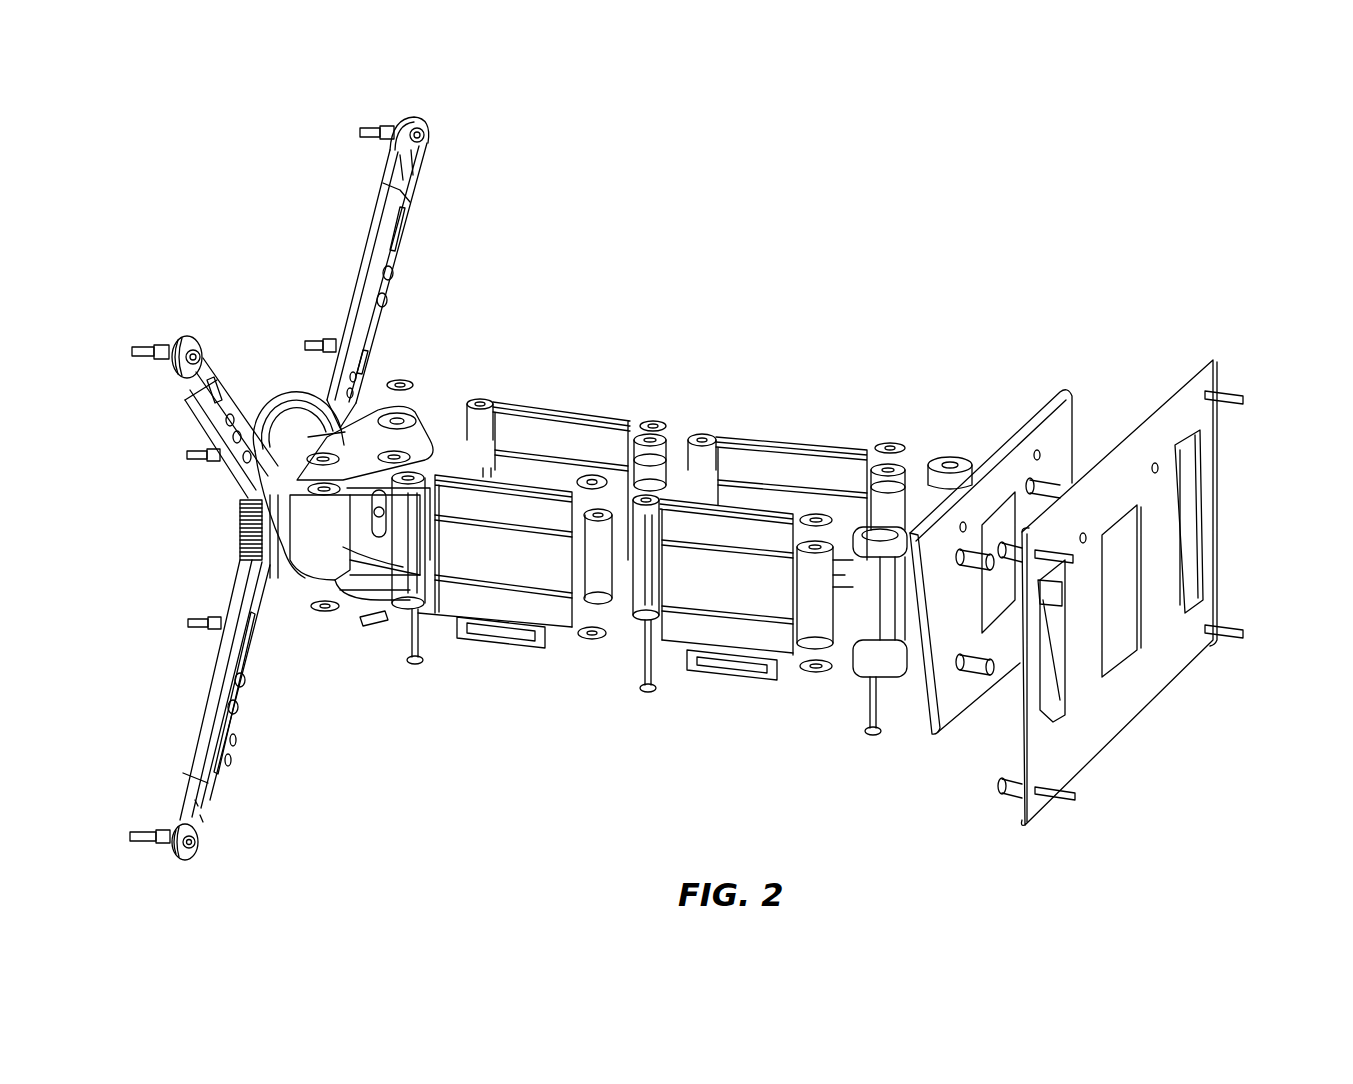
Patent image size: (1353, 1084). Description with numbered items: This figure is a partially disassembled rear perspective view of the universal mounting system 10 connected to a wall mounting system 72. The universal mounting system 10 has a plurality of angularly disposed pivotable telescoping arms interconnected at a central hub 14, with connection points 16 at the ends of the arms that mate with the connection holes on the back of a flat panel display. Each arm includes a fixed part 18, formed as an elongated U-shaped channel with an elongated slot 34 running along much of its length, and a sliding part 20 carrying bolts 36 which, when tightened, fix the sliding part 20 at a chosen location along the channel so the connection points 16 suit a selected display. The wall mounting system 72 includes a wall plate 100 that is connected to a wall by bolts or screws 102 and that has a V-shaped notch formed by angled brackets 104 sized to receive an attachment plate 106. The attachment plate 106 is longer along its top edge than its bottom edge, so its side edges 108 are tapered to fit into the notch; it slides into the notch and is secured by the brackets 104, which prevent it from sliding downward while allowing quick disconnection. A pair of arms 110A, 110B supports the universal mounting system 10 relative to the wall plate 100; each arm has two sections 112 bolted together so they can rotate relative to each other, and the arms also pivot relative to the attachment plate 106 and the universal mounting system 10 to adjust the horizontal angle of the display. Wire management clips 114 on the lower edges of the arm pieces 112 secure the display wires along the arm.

The universal mounting system 10 is at (244, 244).
The central hub 14 is at (290, 392).
The connection points 16 is at (428, 135).
The fixed part 18 is at (356, 268).
The sliding part 20 is at (388, 160).
The elongated slot 34 is at (400, 241).
The bolts 36 is at (393, 270).
The wall mounting system 72 is at (751, 396).
The wall plate 100 is at (1207, 382).
The bolts or screws 102 is at (1240, 394).
The angled brackets 104 is at (1188, 492).
The attachment plate 106 is at (1038, 398).
The side edges 108 is at (933, 708).
The arm 110A is at (560, 652).
The arm 110B is at (604, 407).
The arm sections 112 is at (558, 418).
The wire management clips 114 is at (508, 646).